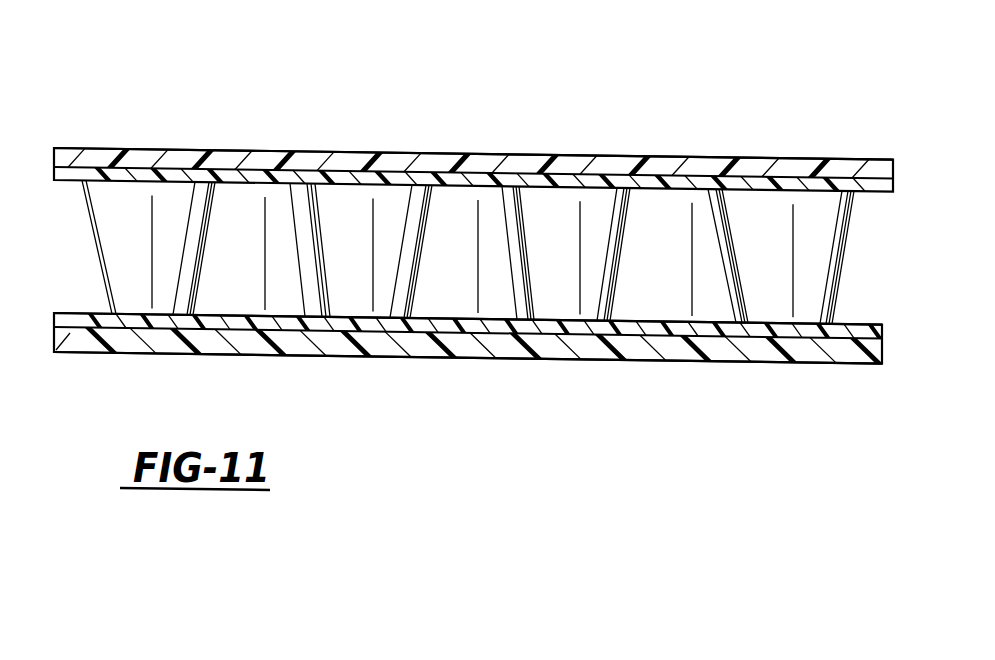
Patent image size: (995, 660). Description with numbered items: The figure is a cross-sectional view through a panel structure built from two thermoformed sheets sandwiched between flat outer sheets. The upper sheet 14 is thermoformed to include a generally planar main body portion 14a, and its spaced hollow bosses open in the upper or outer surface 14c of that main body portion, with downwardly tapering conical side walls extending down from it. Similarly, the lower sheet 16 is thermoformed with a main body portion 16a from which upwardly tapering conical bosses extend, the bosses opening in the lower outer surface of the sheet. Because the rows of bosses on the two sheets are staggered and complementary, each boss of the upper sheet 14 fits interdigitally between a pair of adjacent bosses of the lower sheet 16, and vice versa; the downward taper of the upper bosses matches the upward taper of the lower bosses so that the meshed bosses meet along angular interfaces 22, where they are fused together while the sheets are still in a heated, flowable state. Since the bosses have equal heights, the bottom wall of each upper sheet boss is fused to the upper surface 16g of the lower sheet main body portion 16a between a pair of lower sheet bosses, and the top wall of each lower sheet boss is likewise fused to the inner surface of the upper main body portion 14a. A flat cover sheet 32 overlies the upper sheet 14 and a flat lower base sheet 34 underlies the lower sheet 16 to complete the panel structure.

The upper sheet 14 is at (473, 204).
The main body portion 14a is at (361, 146).
The outer surface 14c is at (423, 167).
The lower sheet 16 is at (469, 296).
The main body portion 16a is at (543, 350).
The upper surface 16g is at (671, 322).
The angular interfaces 22 is at (522, 238).
The flat cover sheet 32 is at (737, 146).
The flat lower base sheet 34 is at (450, 372).